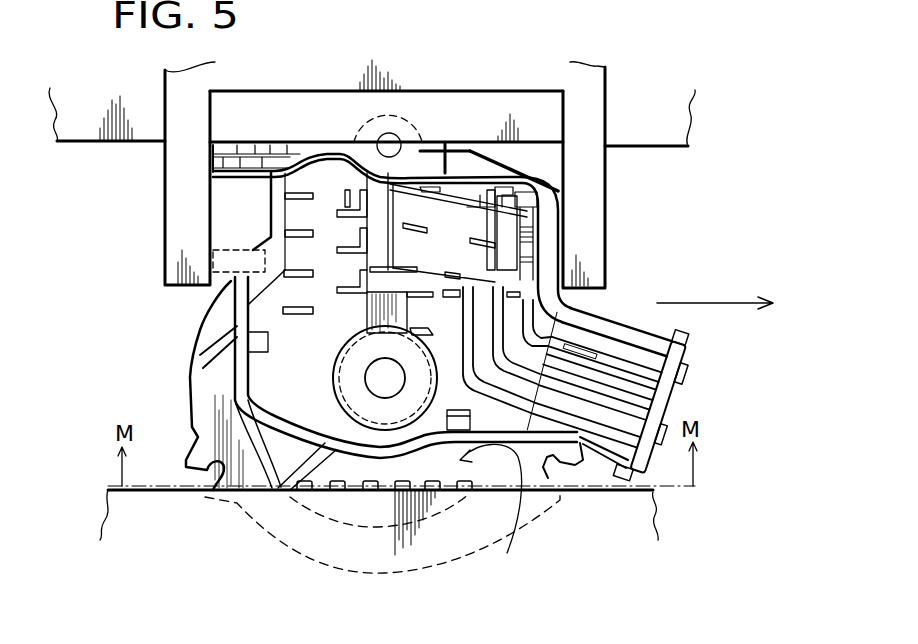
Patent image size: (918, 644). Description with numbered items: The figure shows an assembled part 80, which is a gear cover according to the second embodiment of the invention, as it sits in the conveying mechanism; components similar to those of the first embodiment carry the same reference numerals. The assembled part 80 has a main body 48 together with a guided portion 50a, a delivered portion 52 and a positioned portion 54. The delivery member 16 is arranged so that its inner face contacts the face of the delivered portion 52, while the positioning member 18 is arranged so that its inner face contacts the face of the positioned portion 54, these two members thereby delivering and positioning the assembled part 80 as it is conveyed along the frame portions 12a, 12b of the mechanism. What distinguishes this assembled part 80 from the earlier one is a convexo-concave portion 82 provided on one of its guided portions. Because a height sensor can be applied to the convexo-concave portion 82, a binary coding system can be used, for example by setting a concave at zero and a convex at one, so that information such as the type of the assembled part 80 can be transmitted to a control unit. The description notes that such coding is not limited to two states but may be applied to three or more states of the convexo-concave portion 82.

The upper frame plate 12a is at (433, 105).
The lower frame rail 12b is at (608, 508).
The delivery member 16 is at (177, 205).
The positioning member 18 is at (603, 193).
The main body 48 is at (203, 398).
The guided portion 50a is at (253, 145).
The delivered portion 52 is at (223, 152).
The positioned portion 54 is at (557, 228).
The assembled part 80 is at (157, 333).
The convexo-concave portion 82 is at (382, 518).